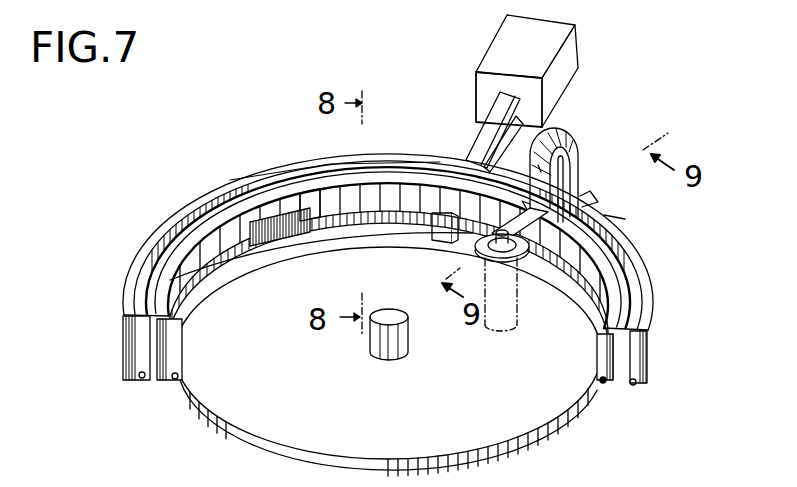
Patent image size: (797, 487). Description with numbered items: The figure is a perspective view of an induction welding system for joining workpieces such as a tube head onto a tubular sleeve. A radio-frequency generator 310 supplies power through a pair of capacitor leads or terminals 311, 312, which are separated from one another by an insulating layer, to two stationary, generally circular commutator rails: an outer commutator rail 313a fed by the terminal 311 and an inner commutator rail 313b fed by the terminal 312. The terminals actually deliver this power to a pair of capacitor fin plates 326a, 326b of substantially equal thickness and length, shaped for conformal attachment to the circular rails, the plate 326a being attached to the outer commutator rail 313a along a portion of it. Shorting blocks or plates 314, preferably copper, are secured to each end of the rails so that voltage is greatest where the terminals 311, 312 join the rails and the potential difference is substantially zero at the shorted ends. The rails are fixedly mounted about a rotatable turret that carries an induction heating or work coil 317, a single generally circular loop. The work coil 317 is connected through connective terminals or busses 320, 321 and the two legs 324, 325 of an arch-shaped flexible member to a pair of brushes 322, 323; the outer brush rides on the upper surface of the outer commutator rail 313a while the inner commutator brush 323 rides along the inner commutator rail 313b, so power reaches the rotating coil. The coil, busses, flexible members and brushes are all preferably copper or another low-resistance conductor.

The radio-frequency generator 310 is at (497, 56).
The capacitor lead or terminal 311 is at (478, 138).
The capacitor lead or terminal 312 is at (527, 120).
The outer commutator rail 313a is at (325, 167).
The inner commutator rail 313b is at (597, 332).
The shorting blocks or plates 314 is at (128, 312).
The induction heating or work coil 317 is at (473, 252).
The connective terminal or buss 320 is at (522, 206).
The connective terminal or buss 321 is at (514, 263).
The commutator brush 322 is at (602, 203).
The inner commutator brush 323 is at (620, 218).
The leg of arch-shaped flexible member 324 is at (582, 146).
The leg of arch-shaped flexible member 325 is at (572, 170).
The capacitor fin plate 326a is at (247, 247).
The capacitor fin plate 326b is at (307, 234).